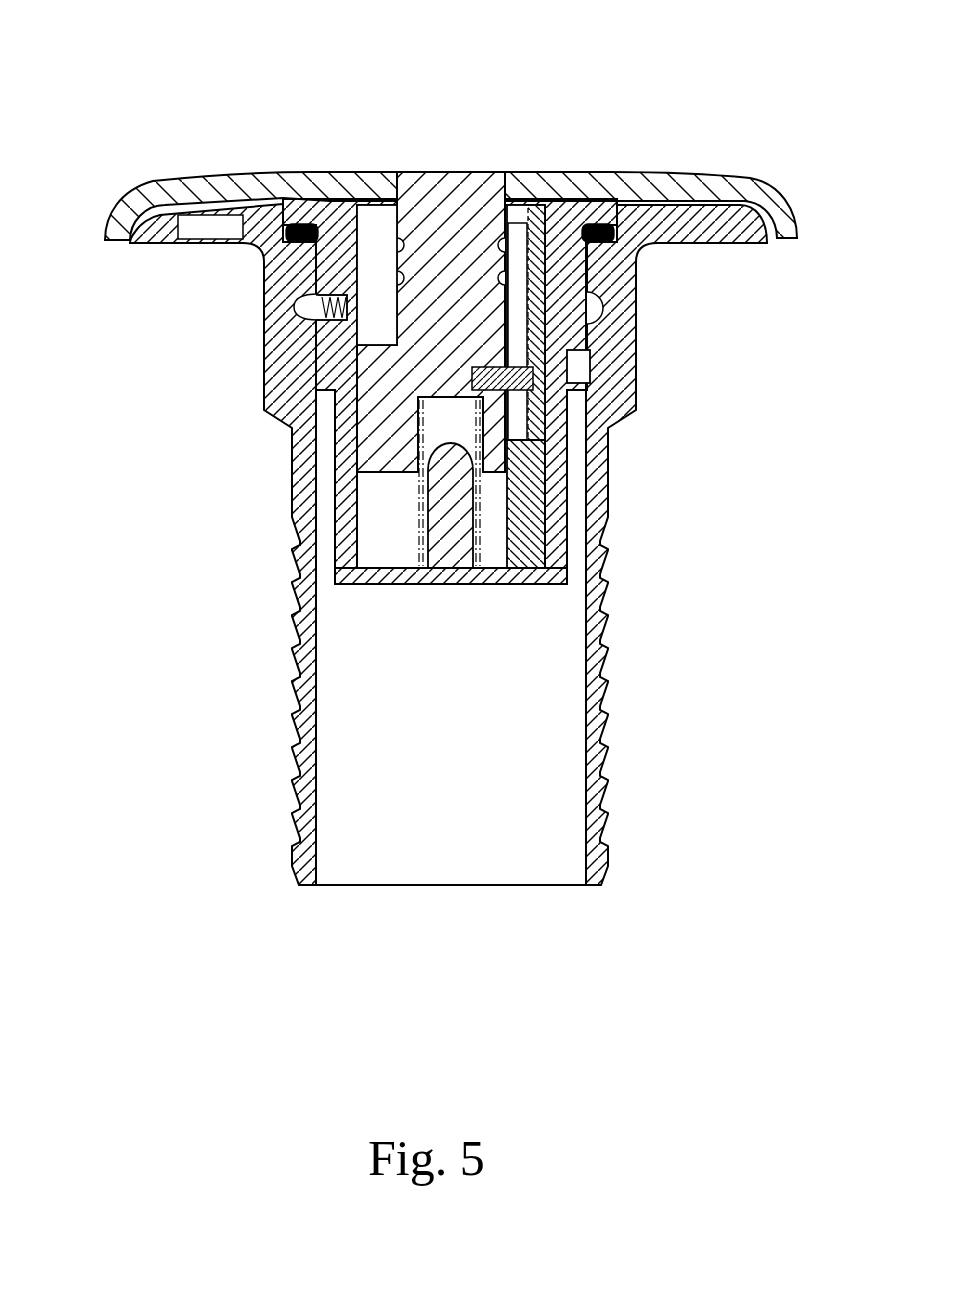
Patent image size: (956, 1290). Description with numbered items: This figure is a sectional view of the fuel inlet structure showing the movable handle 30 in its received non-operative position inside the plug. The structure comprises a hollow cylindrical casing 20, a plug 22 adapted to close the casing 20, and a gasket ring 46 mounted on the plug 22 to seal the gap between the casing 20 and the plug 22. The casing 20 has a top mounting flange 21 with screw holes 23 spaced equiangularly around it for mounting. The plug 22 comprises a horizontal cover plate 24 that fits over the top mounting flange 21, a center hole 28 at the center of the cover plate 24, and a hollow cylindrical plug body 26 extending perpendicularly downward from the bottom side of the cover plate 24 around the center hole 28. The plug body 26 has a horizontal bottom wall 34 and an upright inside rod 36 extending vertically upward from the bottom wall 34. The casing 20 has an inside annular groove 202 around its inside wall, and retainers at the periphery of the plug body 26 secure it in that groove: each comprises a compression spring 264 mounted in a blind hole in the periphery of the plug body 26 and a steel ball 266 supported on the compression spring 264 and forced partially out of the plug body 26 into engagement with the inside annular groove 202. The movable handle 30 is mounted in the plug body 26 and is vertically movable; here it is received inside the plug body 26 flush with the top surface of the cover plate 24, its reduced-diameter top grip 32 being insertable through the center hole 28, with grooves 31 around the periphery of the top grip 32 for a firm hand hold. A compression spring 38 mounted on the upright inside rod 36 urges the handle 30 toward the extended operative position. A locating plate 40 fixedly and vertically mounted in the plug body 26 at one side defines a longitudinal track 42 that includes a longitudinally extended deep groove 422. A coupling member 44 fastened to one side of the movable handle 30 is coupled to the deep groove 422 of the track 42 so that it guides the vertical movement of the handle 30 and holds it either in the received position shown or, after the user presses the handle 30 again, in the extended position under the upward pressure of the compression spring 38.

The hollow cylindrical casing 20 is at (606, 596).
The top mounting flange 21 is at (120, 232).
The plug 22 is at (587, 176).
The screw holes 23 is at (197, 230).
The horizontal cover plate 24 is at (672, 196).
The hollow cylindrical plug body 26 is at (343, 553).
The center hole 28 is at (518, 173).
The movable handle 30 is at (430, 247).
The grooves 31 is at (357, 205).
The top grip 32 is at (452, 172).
The horizontal bottom wall 34 is at (494, 586).
The upright inside rod 36 is at (452, 523).
The compression spring 38 is at (426, 446).
The locating plate 40 is at (530, 500).
The longitudinal track 42 is at (517, 262).
The coupling member 44 is at (536, 373).
The gasket ring 46 is at (302, 224).
The inside annular groove 202 is at (320, 308).
The compression spring 264 is at (286, 330).
The steel ball 266 is at (318, 317).
The deep groove 422 is at (530, 318).